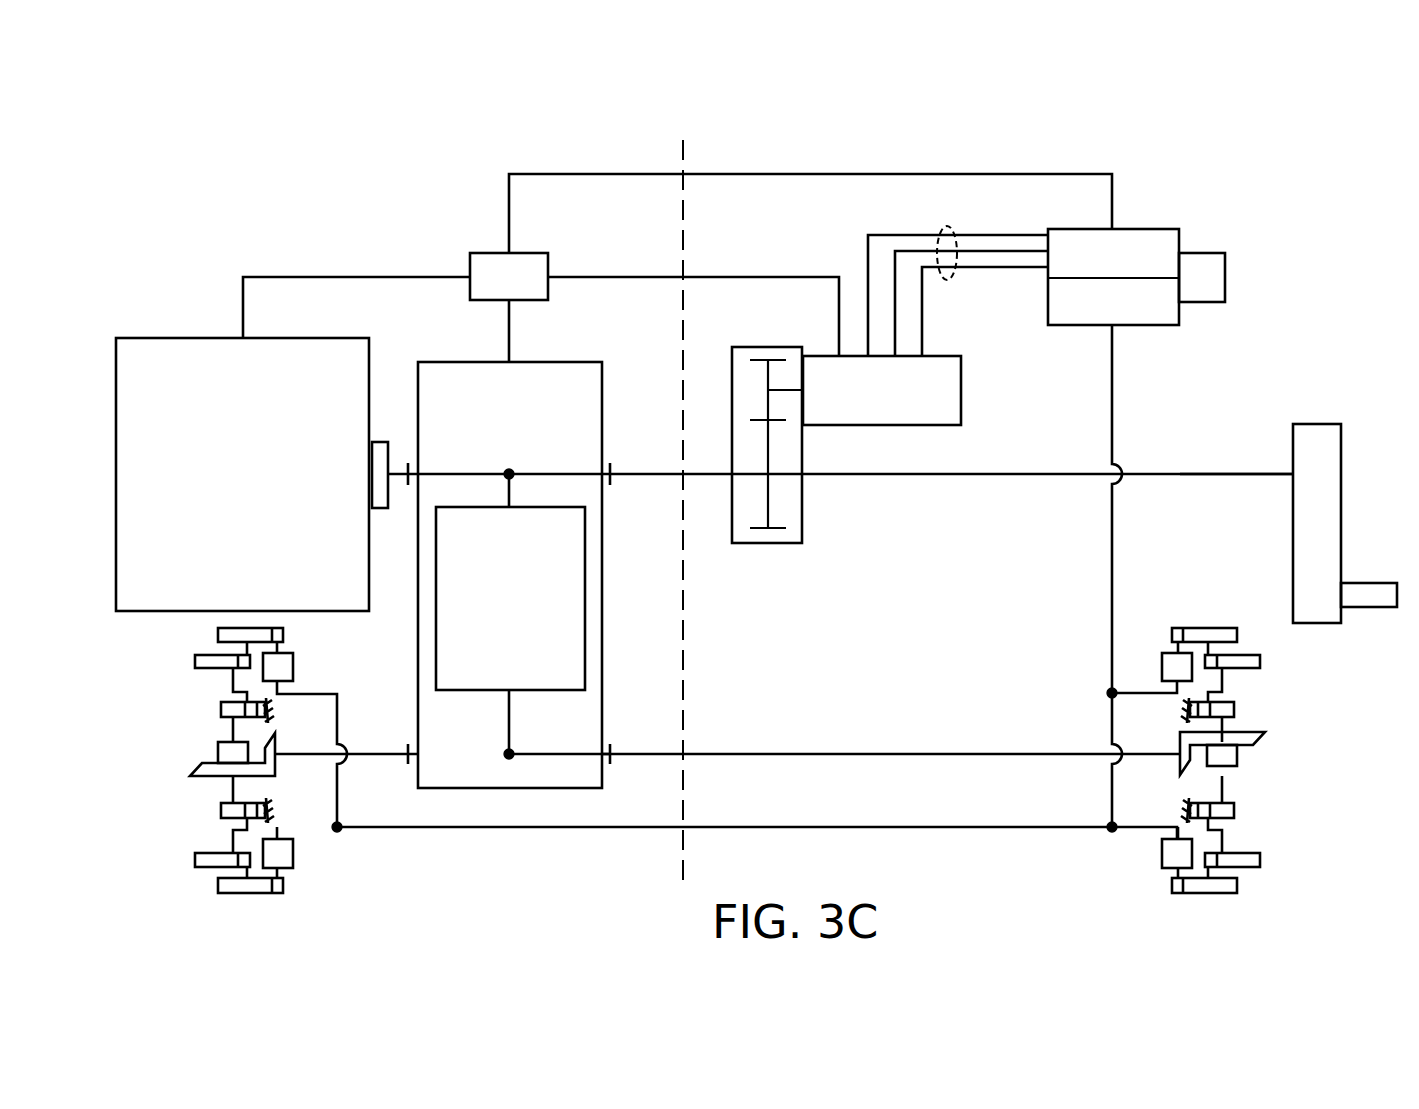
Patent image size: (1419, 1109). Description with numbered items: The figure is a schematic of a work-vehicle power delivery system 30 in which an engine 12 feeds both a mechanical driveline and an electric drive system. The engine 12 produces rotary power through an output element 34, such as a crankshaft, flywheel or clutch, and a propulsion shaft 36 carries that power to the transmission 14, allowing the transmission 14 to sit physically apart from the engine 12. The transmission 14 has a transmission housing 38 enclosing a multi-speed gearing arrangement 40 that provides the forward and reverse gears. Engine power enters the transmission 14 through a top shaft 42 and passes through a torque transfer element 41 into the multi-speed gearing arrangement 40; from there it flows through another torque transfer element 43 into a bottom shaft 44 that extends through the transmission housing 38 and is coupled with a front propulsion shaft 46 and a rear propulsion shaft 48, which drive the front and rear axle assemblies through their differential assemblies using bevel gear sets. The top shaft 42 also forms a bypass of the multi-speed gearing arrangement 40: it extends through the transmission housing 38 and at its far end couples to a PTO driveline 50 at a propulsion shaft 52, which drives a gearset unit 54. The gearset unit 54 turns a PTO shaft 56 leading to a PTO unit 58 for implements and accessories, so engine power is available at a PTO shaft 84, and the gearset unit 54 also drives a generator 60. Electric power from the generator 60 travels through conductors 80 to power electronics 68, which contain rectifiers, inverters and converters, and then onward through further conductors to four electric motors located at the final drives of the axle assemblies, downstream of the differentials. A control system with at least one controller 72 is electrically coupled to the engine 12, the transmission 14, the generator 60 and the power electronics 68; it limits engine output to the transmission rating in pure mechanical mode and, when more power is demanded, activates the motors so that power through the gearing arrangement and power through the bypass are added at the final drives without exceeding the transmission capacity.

The engine 12 is at (258, 484).
The transmission 14 is at (537, 595).
The power delivery system 30 is at (830, 136).
The output element 34 is at (381, 442).
The propulsion shaft 36 is at (396, 478).
The transmission housing 38 is at (508, 789).
The multi-speed gearing arrangement 40 is at (436, 662).
The torque transfer element 41 is at (545, 474).
The top shaft 42 is at (470, 474).
The torque transfer element 43 is at (509, 722).
The bottom shaft 44 is at (570, 755).
The front propulsion shaft 46 is at (313, 754).
The rear propulsion shaft 48 is at (735, 752).
The PTO driveline 50 is at (1263, 465).
The propulsion shaft 52 is at (720, 476).
The gearset unit 54 is at (766, 347).
The PTO shaft 56 is at (1168, 474).
The PTO unit 58 is at (1341, 440).
The generator 60 is at (961, 390).
The power electronics 68 is at (1152, 229).
The controller 72 is at (523, 293).
The conductors 80 is at (946, 227).
The PTO shaft 84 is at (783, 391).